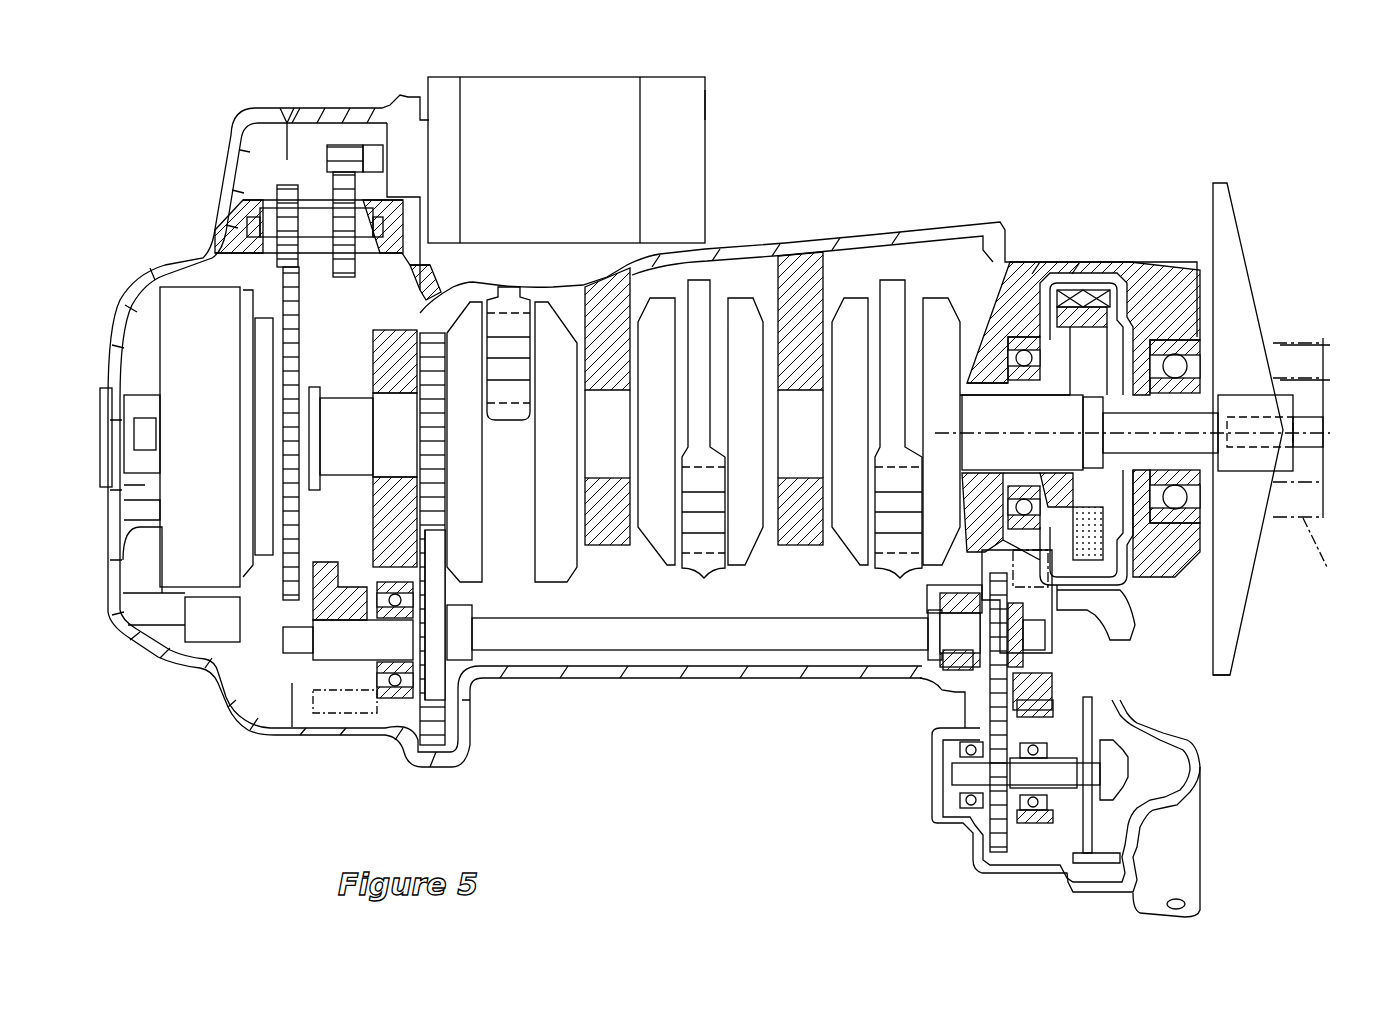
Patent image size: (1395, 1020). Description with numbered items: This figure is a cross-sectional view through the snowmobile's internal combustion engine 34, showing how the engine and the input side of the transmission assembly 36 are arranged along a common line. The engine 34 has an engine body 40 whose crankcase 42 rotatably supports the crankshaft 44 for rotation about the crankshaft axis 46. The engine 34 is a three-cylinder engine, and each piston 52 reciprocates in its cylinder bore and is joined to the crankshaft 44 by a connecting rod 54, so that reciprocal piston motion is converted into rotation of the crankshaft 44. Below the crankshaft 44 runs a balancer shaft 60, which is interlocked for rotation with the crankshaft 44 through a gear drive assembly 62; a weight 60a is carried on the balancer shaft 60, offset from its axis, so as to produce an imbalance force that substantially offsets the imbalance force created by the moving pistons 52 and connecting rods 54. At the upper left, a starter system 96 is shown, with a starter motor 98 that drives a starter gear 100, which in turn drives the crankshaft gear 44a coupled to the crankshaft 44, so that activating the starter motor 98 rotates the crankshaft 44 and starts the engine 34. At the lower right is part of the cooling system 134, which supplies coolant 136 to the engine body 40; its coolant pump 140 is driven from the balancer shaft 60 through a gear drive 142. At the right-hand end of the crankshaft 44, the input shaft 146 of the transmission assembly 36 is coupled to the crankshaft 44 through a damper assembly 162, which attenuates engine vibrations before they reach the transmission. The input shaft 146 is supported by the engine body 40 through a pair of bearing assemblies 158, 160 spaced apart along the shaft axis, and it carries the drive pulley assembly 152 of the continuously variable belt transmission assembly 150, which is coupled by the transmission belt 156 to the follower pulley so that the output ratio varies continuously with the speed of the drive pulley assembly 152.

The internal combustion engine 34 is at (1132, 116).
The transmission assembly 36 is at (1299, 180).
The engine body 40 is at (1114, 179).
The crankcase 42 is at (1002, 293).
The crankshaft 44 is at (853, 298).
The crankshaft gear 44a is at (302, 318).
The crankshaft axis 46 is at (1272, 428).
The piston 52 is at (915, 236).
The connecting rod 54 is at (893, 342).
The balancer shaft 60 is at (668, 652).
The weight 60a is at (318, 568).
The gear drive assembly 62 is at (446, 697).
The starter system 96 is at (714, 103).
The starter motor 98 is at (556, 163).
The starter gear 100 is at (292, 185).
The cooling system 134 is at (902, 815).
The coolant 136 is at (1160, 830).
The coolant pump 140 is at (1200, 765).
The gear drive 142 is at (990, 728).
The input shaft 146 is at (1240, 467).
The continuously variable belt transmission assembly 150 is at (1237, 194).
The drive pulley assembly 152 is at (1242, 645).
The transmission belt 156 is at (1329, 554).
The bearing assembly 158 is at (1022, 338).
The bearing assembly 160 is at (1172, 355).
The damper assembly 162 is at (1112, 592).